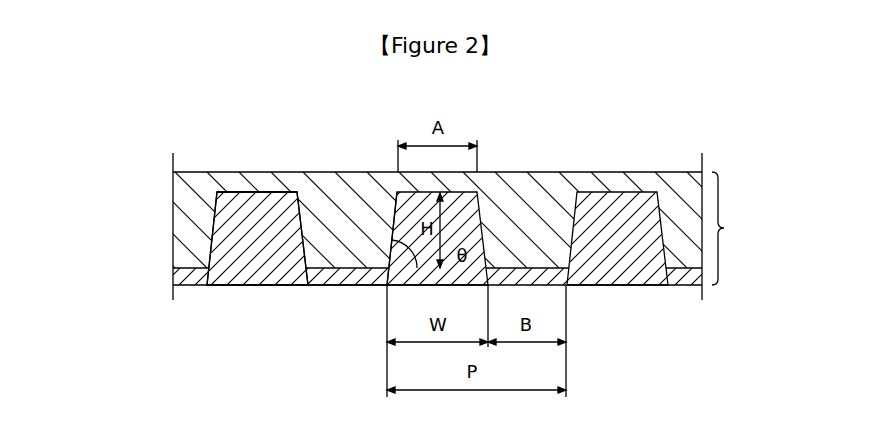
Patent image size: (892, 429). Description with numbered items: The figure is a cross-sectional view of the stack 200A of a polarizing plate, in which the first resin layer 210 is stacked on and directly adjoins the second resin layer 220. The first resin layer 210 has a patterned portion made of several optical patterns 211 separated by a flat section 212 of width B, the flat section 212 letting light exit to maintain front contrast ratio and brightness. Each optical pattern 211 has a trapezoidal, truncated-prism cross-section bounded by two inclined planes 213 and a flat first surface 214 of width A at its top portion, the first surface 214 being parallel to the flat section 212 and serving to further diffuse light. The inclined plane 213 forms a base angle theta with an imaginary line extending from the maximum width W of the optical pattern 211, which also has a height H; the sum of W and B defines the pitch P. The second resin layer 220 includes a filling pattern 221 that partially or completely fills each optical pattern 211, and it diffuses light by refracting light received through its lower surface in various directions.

The first resin layer 210 is at (182, 226).
The second resin layer 220 is at (180, 273).
The optical pattern 211 is at (292, 222).
The filling pattern 221 is at (244, 240).
The flat section 212 is at (345, 278).
The inclined plane 213 is at (392, 272).
The first surface 214 is at (265, 192).
The stack 200A is at (750, 228).